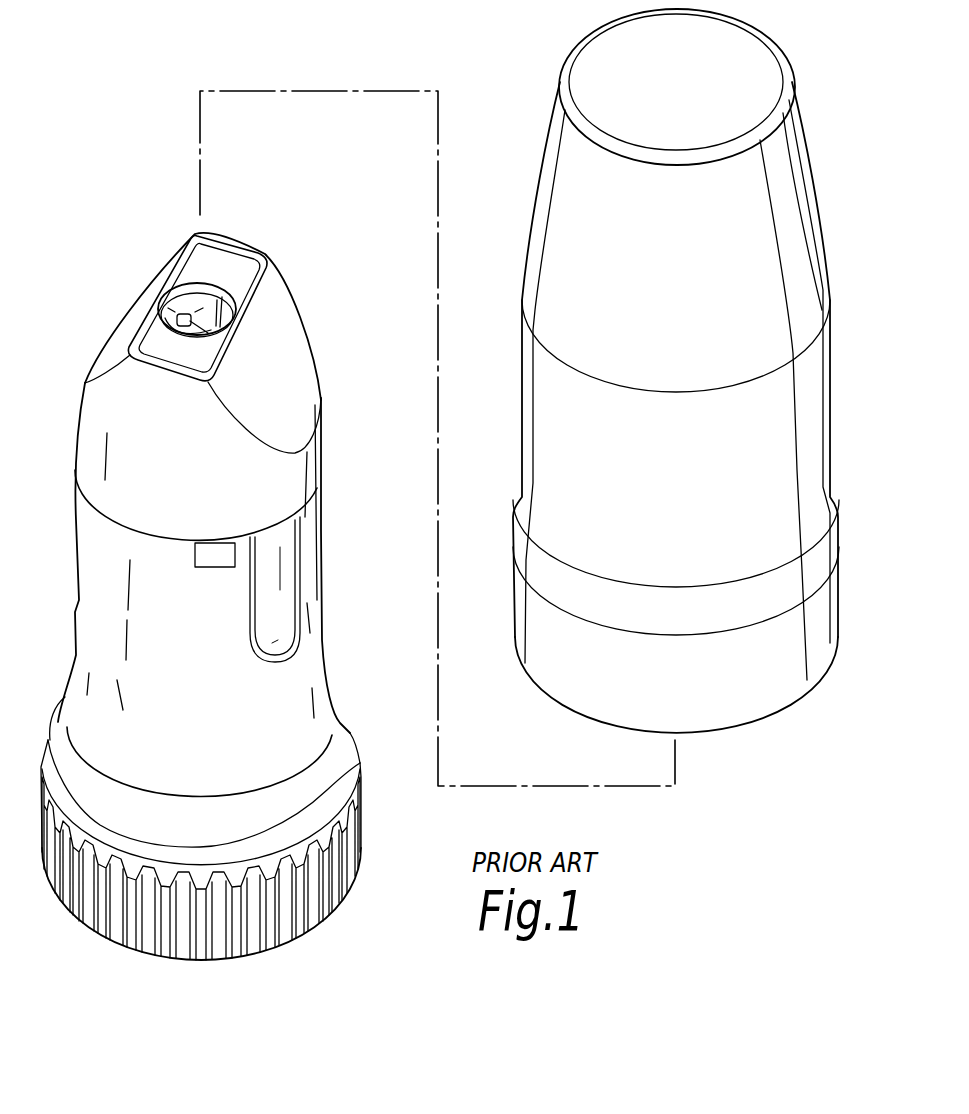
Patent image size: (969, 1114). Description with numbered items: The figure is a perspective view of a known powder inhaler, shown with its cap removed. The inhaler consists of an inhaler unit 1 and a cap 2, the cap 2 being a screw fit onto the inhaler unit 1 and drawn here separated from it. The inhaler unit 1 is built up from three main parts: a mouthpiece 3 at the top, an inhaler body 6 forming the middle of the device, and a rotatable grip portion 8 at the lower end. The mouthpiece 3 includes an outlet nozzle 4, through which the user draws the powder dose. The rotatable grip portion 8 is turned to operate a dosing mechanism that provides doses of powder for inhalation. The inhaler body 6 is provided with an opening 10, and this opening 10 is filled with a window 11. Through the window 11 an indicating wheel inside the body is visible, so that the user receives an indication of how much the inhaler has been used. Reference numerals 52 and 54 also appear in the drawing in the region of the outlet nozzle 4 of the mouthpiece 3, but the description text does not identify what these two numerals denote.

The inhaler unit 1 is at (148, 264).
The cap 2 is at (832, 389).
The mouthpiece 3 is at (271, 322).
The outlet nozzle 4 is at (158, 321).
The bulb 52 is at (206, 294).
The reflector 54 is at (213, 317).
The inhaler body 6 is at (280, 688).
The rotatable grip portion 8 is at (292, 936).
The opening 10 is at (227, 567).
The window 11 is at (235, 548).